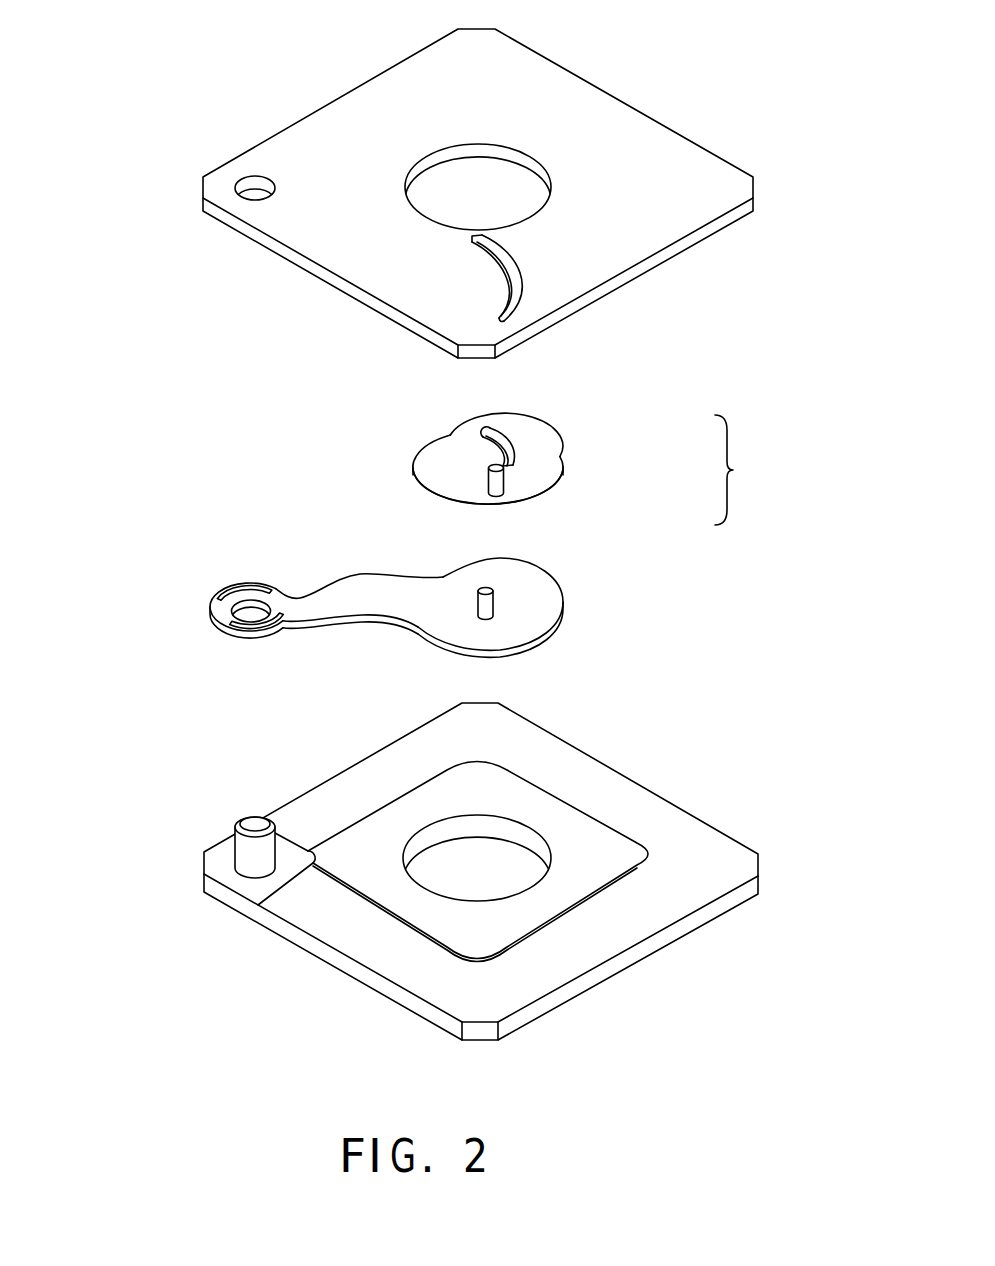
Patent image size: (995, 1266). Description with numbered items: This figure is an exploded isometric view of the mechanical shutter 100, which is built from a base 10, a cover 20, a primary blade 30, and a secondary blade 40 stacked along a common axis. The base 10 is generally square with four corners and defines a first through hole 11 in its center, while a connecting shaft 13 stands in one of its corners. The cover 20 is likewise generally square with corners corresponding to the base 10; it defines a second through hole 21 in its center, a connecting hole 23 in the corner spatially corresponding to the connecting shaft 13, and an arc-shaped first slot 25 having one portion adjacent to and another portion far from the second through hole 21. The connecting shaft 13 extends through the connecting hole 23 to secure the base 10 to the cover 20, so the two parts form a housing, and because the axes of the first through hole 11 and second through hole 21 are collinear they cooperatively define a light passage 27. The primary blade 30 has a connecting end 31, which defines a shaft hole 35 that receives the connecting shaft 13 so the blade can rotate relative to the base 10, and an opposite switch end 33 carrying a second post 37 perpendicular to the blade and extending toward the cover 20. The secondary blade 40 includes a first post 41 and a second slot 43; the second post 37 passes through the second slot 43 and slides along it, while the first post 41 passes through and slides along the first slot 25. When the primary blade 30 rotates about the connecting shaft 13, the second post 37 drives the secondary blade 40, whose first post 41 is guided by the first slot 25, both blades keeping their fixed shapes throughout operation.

The mechanical shutter 100 is at (198, 72).
The base 10 is at (694, 850).
The first through hole 11 is at (503, 860).
The connecting shaft 13 is at (245, 850).
The cover 20 is at (667, 177).
The second through hole 21 is at (518, 193).
The connecting hole 23 is at (253, 185).
The first slot 25 is at (518, 285).
The light passage 27 is at (741, 470).
The primary blade 30 is at (313, 555).
The connecting end 31 is at (222, 616).
The switch end 33 is at (532, 590).
The shaft hole 35 is at (250, 608).
The second post 37 is at (493, 608).
The secondary blade 40 is at (538, 448).
The first post 41 is at (500, 481).
The second slot 43 is at (500, 453).